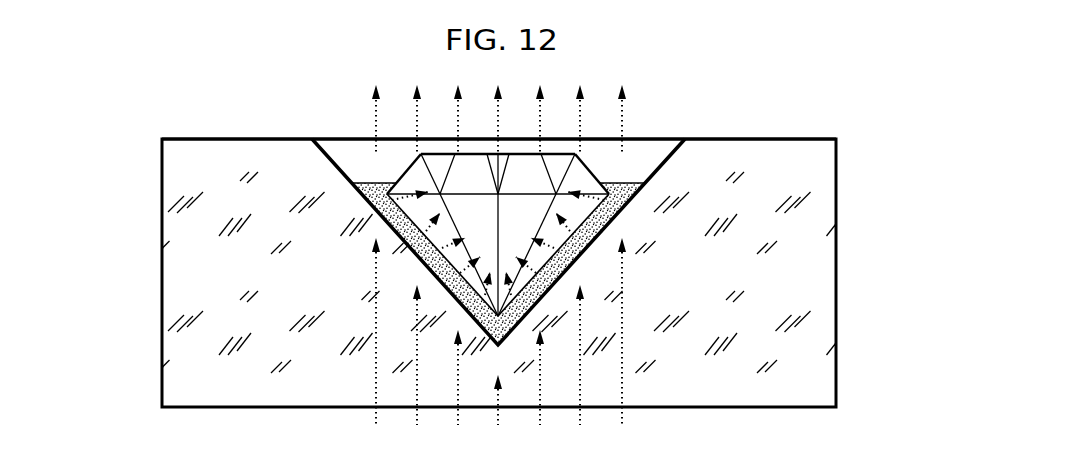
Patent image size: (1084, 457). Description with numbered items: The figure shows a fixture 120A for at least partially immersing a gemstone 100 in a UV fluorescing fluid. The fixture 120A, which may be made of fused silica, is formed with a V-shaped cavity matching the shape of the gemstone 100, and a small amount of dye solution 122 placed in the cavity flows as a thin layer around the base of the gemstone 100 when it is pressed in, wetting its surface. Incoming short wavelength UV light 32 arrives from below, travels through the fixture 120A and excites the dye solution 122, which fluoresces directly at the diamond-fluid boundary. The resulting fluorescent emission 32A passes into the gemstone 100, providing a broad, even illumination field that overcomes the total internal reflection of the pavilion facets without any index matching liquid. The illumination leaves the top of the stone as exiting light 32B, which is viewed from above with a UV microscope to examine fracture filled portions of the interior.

The gemstone 100 is at (380, 138).
The fixture 120A is at (792, 138).
The dye solution 122 is at (373, 182).
The incoming short wavelength UV light 32 is at (576, 269).
The fluorescent emission 32A is at (603, 187).
The exiting light 32B is at (622, 112).